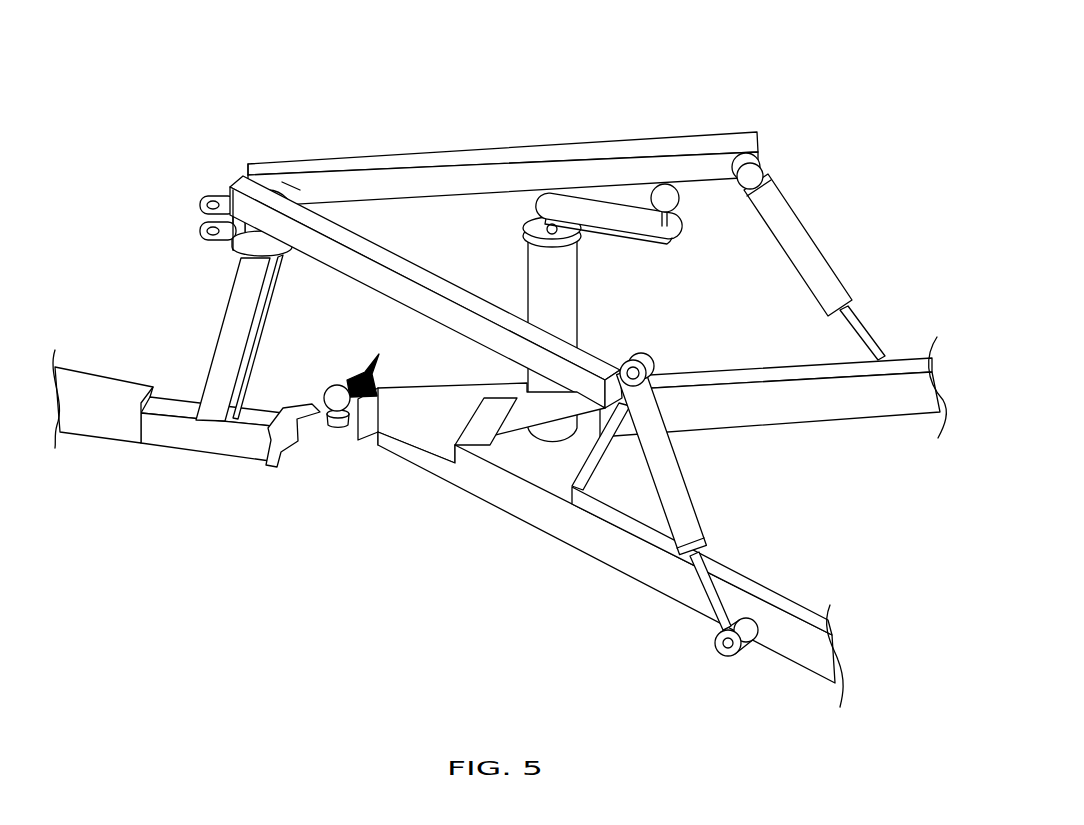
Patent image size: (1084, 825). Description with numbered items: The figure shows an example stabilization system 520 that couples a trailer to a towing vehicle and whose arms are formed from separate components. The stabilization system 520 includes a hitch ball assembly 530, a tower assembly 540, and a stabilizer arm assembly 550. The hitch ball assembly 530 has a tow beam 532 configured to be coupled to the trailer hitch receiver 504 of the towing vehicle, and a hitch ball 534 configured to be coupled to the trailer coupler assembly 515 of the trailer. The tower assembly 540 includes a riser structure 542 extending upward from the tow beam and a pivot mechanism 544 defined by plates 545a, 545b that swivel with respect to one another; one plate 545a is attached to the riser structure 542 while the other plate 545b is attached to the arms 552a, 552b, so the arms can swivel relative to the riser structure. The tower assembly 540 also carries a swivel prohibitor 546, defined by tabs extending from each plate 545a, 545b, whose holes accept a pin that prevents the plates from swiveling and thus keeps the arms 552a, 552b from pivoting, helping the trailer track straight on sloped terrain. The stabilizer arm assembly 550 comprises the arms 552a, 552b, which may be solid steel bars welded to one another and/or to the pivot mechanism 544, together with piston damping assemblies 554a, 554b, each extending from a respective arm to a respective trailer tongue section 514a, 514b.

The trailer hitch receiver 504 is at (103, 443).
The trailer tongue section 514a is at (753, 367).
The trailer tongue section 514b is at (778, 593).
The trailer coupler assembly 515 is at (333, 384).
The stabilization system 520 is at (154, 74).
The hitch ball assembly 530 is at (193, 530).
The tow beam 532 is at (203, 447).
The hitch ball 534 is at (320, 444).
The tower assembly 540 is at (102, 258).
The riser structure 542 is at (210, 359).
The pivot mechanism 544 is at (292, 186).
The plate 545a is at (245, 262).
The plate 545b is at (233, 188).
The swivel prohibitor 546 is at (200, 217).
The stabilizer arm assembly 550 is at (875, 94).
The arm 552a is at (512, 146).
The arm 552b is at (447, 280).
The piston damping assembly 554a is at (811, 227).
The piston damping assembly 554b is at (682, 468).